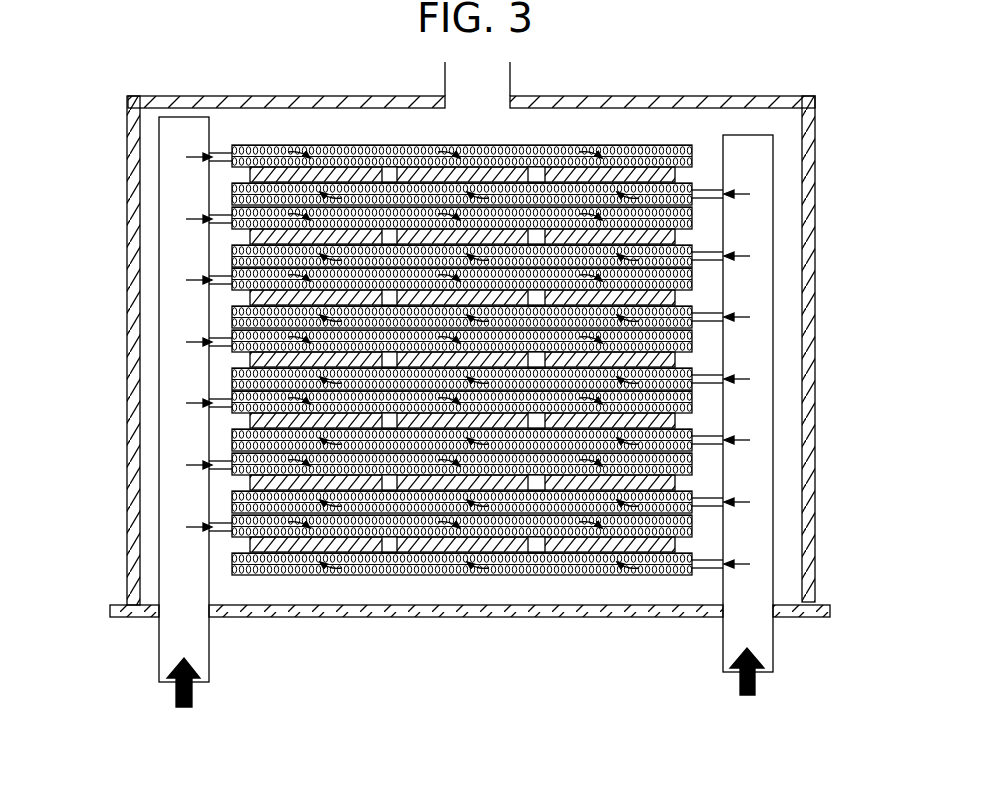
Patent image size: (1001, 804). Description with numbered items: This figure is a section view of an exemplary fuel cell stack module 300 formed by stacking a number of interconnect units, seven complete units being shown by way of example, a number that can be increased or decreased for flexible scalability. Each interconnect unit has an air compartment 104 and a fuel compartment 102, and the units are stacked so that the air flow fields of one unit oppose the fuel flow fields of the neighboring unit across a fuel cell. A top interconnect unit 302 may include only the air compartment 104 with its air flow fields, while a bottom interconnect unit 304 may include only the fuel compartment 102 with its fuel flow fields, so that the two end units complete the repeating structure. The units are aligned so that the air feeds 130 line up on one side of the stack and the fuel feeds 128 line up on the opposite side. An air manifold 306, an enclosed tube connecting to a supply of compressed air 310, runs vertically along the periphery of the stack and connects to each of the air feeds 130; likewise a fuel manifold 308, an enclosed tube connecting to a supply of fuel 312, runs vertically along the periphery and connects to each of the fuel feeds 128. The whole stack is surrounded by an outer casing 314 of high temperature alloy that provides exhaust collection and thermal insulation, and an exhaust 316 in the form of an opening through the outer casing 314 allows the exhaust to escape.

The fuel cell stack module 300 is at (605, 126).
The top interconnect unit 302 is at (512, 160).
The bottom interconnect unit 304 is at (545, 576).
The air manifold 306 is at (182, 642).
The fuel manifold 308 is at (752, 634).
The supply of compressed air 310 is at (180, 710).
The supply of fuel 312 is at (746, 700).
The outer casing 314 is at (815, 186).
The exhaust 316 is at (472, 86).
The fuel compartment 102 is at (692, 192).
The air compartment 104 is at (258, 156).
The fuel feed 128 is at (700, 566).
The air feed 130 is at (222, 532).